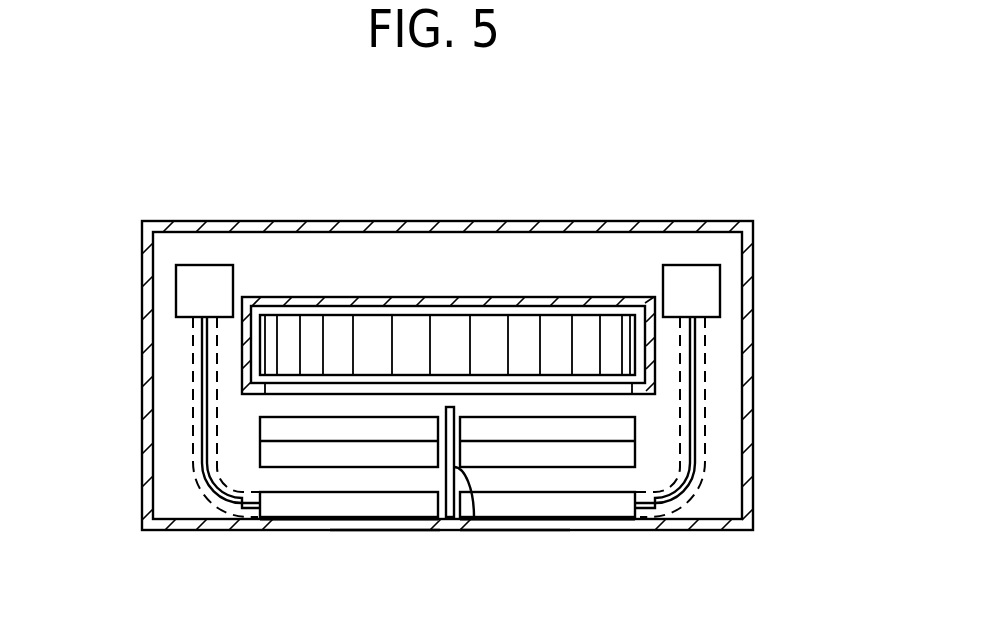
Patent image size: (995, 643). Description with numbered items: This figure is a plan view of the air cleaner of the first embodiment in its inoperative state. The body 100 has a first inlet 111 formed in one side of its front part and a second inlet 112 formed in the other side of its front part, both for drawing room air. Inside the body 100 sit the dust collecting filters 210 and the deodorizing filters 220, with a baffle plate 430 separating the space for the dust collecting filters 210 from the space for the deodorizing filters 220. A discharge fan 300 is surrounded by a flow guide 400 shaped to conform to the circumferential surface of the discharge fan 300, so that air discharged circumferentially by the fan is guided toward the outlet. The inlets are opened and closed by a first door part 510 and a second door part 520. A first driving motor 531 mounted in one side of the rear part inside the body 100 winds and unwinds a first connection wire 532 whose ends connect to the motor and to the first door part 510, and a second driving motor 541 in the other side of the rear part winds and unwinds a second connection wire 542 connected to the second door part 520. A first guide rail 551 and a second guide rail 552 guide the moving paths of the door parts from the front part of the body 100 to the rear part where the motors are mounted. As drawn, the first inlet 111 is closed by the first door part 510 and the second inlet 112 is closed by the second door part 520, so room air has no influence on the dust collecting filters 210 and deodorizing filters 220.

The body 100 is at (643, 226).
The first inlet 111 is at (367, 522).
The second inlet 112 is at (530, 522).
The dust collecting filters 210 is at (263, 453).
The deodorizing filters 220 is at (632, 452).
The discharge fan 300 is at (556, 330).
The flow guide 400 is at (450, 297).
The baffle plate 430 is at (465, 522).
The first door part 510 is at (307, 522).
The second door part 520 is at (603, 522).
The first driving motor 531 is at (196, 291).
The first connection wire 532 is at (202, 376).
The second driving motor 541 is at (703, 291).
The second connection wire 542 is at (695, 376).
The first guide rail 551 is at (193, 424).
The second guide rail 552 is at (707, 424).